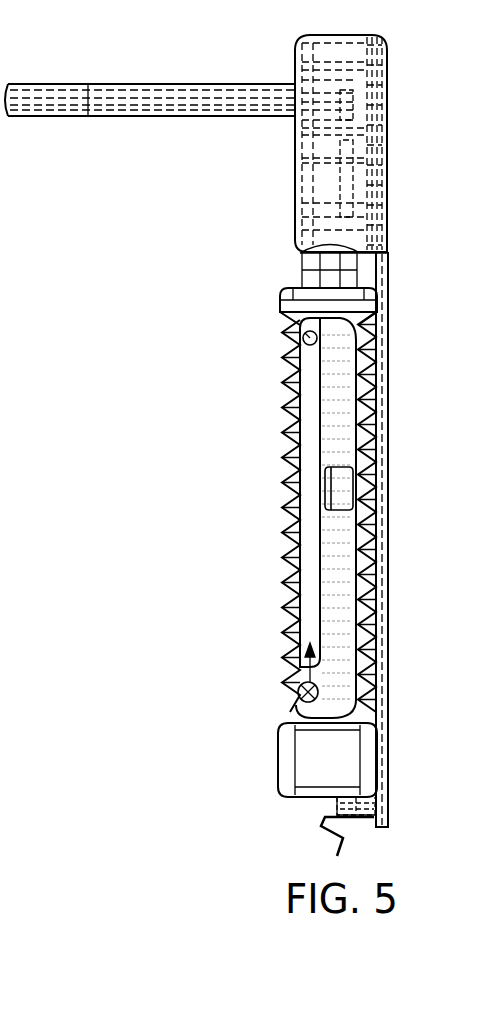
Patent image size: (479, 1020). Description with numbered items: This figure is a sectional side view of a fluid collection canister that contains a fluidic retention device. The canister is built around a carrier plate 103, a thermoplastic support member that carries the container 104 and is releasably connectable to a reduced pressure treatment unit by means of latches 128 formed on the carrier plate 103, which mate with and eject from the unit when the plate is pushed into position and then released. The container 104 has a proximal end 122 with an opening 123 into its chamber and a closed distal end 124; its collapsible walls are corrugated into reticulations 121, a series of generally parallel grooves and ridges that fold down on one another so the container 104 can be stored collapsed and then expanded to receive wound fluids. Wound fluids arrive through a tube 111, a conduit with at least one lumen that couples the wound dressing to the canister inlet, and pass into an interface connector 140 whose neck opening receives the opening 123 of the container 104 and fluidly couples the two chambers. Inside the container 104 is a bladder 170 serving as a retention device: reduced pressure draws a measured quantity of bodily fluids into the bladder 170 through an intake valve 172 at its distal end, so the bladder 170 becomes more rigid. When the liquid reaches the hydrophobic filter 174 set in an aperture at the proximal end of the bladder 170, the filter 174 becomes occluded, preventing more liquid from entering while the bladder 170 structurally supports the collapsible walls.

The container 104 is at (256, 43).
The tube 111 is at (152, 83).
The interface connector 140 is at (295, 172).
The opening 123 is at (307, 267).
The proximal end 122 is at (283, 289).
The hydrophobic filter 174 is at (300, 340).
The reticulations 121 is at (283, 432).
The bladder 170 is at (297, 477).
The carrier plate 103 is at (388, 562).
The intake valve 172 is at (292, 704).
The distal end 124 is at (296, 797).
The latches 128 is at (347, 853).